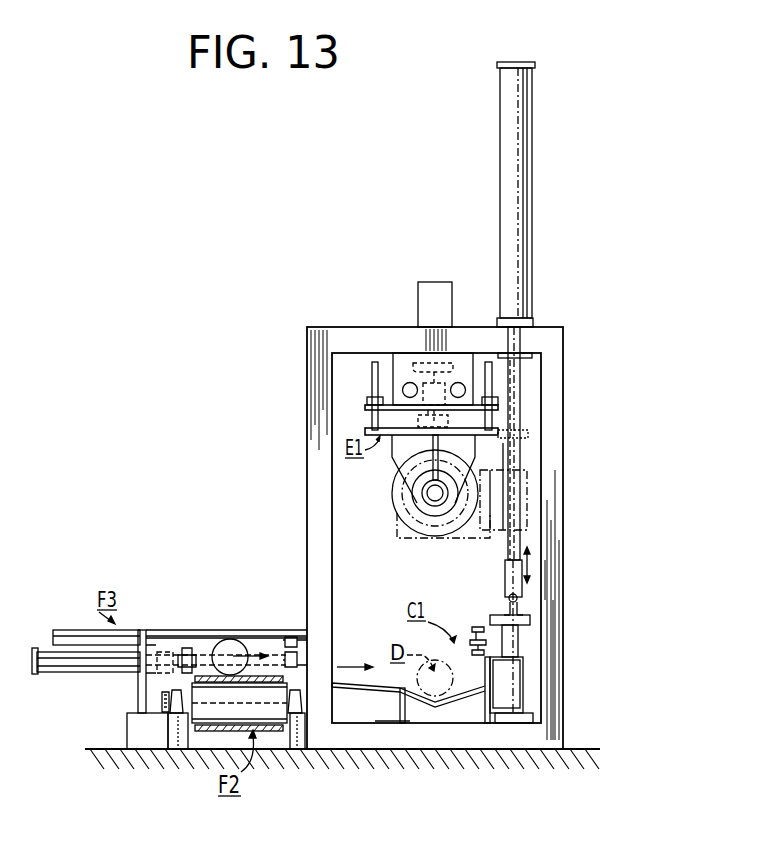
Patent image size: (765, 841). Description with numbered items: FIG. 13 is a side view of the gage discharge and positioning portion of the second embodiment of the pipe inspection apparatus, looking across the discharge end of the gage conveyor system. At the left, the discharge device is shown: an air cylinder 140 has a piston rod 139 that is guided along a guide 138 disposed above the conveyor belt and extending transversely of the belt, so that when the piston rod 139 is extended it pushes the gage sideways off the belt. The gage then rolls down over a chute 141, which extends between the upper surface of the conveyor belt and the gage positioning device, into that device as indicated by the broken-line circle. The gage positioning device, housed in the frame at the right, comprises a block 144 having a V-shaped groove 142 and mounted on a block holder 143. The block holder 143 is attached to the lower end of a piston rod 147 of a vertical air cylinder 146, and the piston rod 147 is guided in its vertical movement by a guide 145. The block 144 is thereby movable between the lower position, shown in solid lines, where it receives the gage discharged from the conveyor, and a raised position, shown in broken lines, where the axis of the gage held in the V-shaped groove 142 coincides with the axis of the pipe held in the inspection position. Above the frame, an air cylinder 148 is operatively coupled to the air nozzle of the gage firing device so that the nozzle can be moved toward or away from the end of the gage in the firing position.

The guide 138 is at (127, 638).
The piston rod 139 is at (173, 677).
The air cylinder 140 is at (47, 665).
The chute 141 is at (348, 691).
The V-shaped groove 142 is at (446, 705).
The block holder 143 is at (517, 680).
The block 144 is at (412, 711).
The guide 145 is at (520, 420).
The vertical air cylinder 146 is at (506, 107).
The piston rod 147 is at (515, 378).
The air cylinder 148 is at (430, 288).